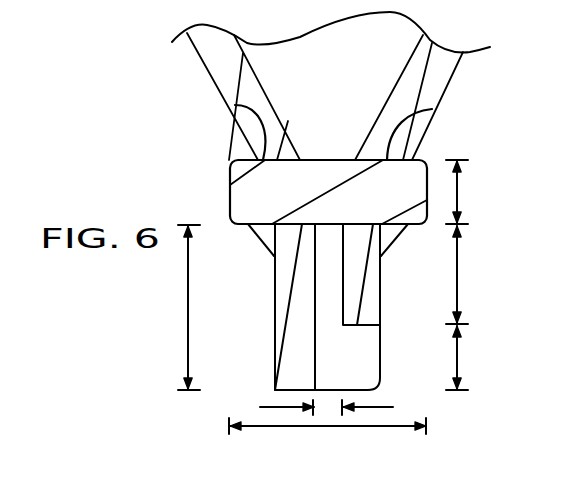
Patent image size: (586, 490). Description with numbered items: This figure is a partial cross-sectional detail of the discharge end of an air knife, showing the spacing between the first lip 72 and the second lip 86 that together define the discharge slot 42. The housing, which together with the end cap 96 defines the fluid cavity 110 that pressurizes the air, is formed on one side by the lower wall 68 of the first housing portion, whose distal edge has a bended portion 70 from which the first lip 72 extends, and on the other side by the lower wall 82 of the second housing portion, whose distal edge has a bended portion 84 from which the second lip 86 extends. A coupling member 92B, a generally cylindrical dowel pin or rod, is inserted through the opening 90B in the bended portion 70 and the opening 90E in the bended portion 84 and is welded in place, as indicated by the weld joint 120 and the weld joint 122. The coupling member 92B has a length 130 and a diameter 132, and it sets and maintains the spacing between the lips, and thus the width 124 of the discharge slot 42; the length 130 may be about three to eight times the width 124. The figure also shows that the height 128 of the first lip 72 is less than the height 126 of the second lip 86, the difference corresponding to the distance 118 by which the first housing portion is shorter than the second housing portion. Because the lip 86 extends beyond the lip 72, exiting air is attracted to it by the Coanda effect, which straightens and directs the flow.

The discharge slot 42 is at (330, 331).
The lower wall 68 is at (443, 62).
The bended portion 70 is at (351, 153).
The first lip 72 is at (373, 302).
The lower wall 82 is at (213, 50).
The bended portion 84 is at (306, 153).
The second lip 86 is at (288, 270).
The opening 90B is at (432, 109).
The opening 90E is at (235, 105).
The coupling member 92B is at (393, 209).
The end cap 96 is at (382, 32).
The fluid cavity 110 is at (352, 66).
The height difference 118 is at (460, 358).
The weld joint 120 is at (418, 152).
The weld joint 122 is at (242, 151).
The width of the discharge slot 124 is at (268, 405).
The height of the lip 86 126 is at (185, 306).
The height of the lip 72 128 is at (460, 277).
The length of the coupling member 130 is at (333, 430).
The diameter of the coupling member 132 is at (460, 192).